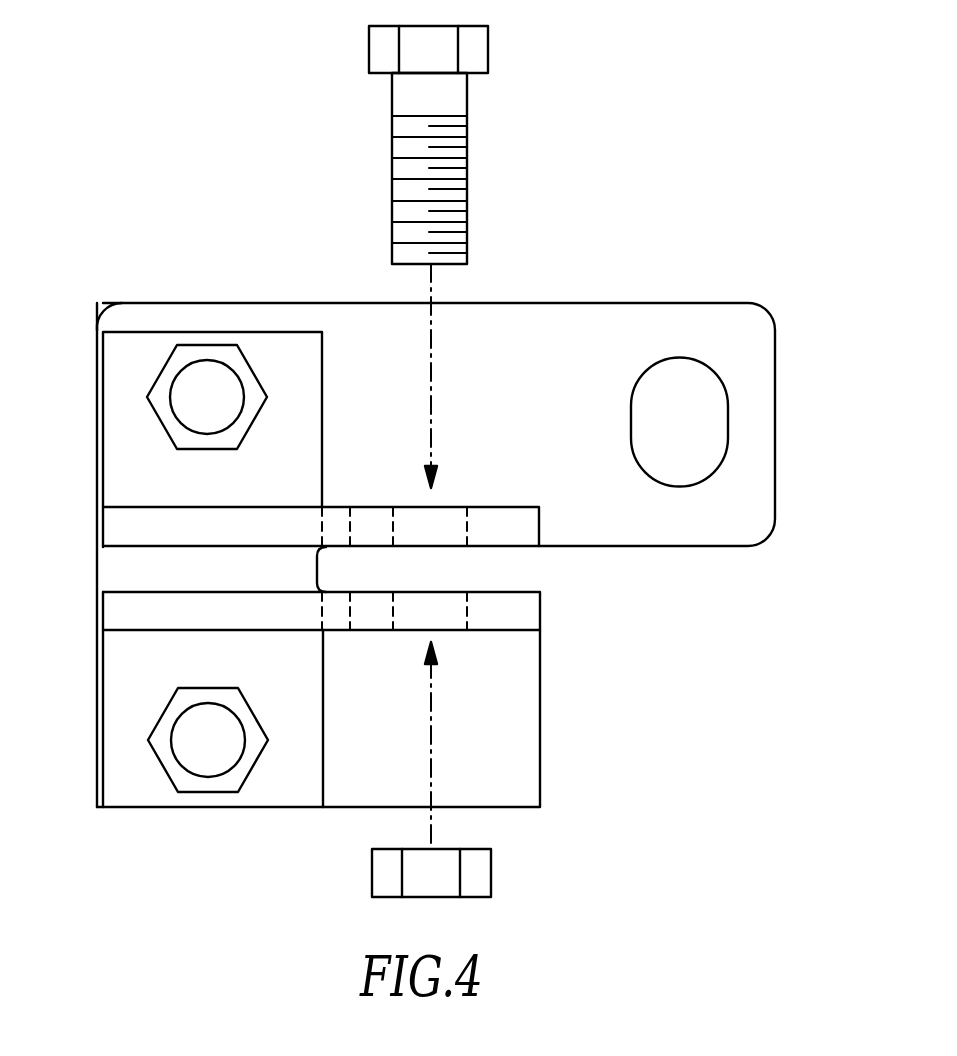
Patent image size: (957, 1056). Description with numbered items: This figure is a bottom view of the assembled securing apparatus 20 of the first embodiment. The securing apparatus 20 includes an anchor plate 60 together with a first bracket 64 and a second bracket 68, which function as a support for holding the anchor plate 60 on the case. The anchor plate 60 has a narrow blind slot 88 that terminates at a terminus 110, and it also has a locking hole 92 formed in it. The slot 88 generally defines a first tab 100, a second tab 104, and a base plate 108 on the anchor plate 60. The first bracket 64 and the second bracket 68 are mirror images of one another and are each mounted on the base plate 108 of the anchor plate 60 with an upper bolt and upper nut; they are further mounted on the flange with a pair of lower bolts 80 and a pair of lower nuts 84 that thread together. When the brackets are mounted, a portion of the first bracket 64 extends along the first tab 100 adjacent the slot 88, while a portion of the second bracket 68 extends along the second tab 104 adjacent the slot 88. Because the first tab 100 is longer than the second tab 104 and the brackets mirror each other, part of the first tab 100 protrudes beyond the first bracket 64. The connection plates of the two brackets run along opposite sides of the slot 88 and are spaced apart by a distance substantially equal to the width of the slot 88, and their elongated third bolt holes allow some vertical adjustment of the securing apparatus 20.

The securing apparatus 20 is at (643, 293).
The anchor plate 60 is at (560, 305).
The first bracket 64 is at (231, 332).
The second bracket 68 is at (327, 766).
The lower bolt 80 is at (488, 63).
The lower nut 84 is at (491, 870).
The slot 88 is at (521, 547).
The locking hole 92 is at (678, 360).
The first tab 100 is at (775, 385).
The second tab 104 is at (540, 680).
The base plate 108 is at (97, 458).
The terminus 110 is at (318, 568).